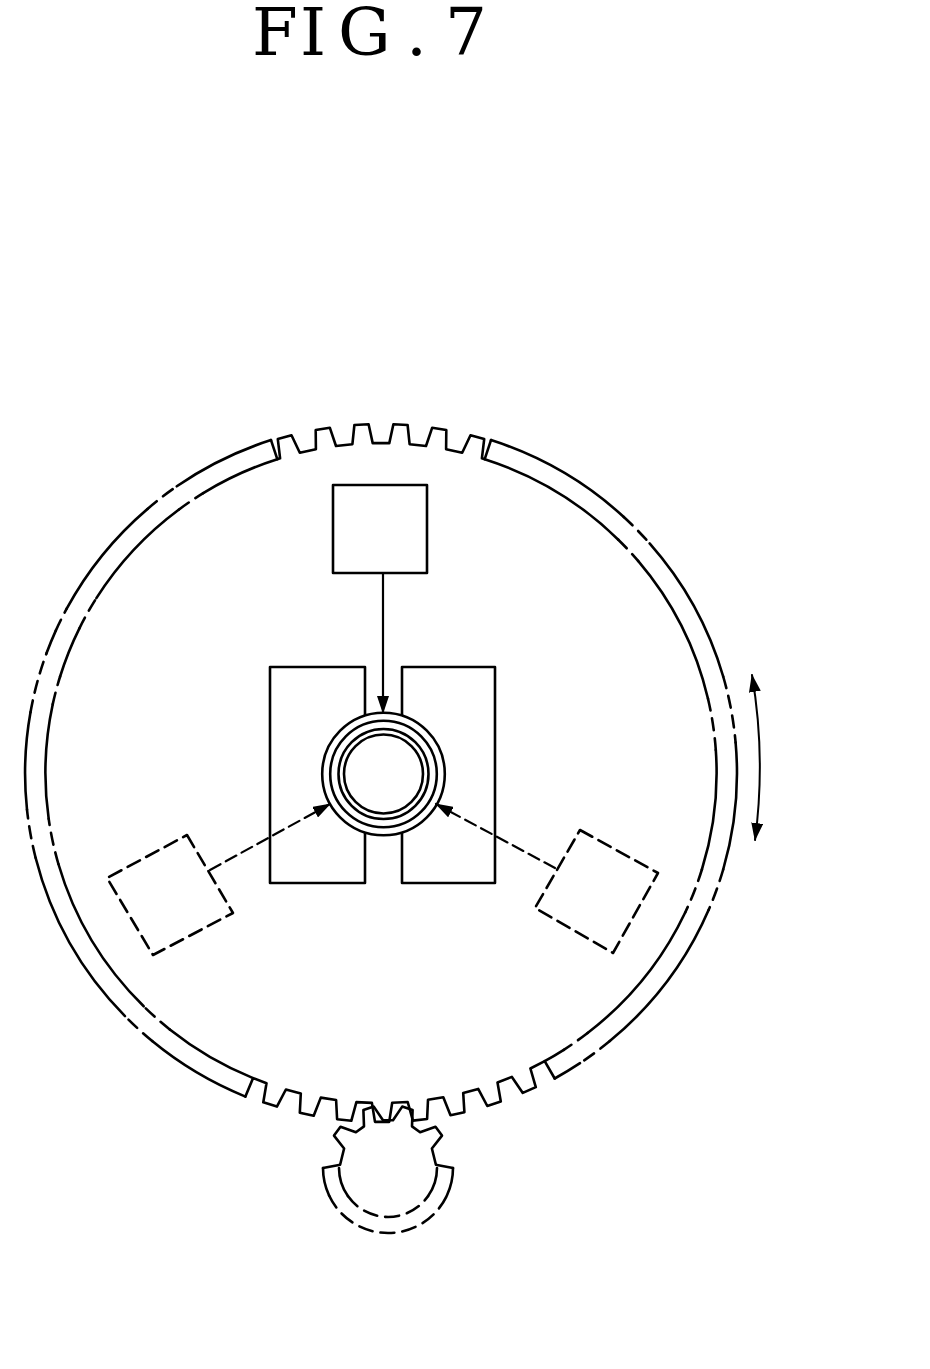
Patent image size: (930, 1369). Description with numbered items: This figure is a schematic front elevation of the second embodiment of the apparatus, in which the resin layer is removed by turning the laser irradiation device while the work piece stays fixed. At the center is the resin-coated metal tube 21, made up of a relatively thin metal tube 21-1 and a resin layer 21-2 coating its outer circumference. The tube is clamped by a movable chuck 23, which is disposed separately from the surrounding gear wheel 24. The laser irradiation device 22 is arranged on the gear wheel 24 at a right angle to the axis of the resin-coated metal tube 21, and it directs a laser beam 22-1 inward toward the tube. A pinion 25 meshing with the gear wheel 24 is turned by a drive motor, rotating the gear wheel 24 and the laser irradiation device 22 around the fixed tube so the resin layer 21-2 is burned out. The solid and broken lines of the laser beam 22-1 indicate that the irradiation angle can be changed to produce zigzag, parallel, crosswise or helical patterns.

The resin-coated metal tube 21 is at (318, 747).
The metal tube 21-1 is at (381, 818).
The resin layer 21-2 is at (440, 768).
The laser irradiation device 22 is at (333, 523).
The laser beam 22-1 is at (384, 628).
The chuck 23 is at (483, 725).
The gear wheel 24 is at (688, 594).
The pinion 25 is at (413, 1157).